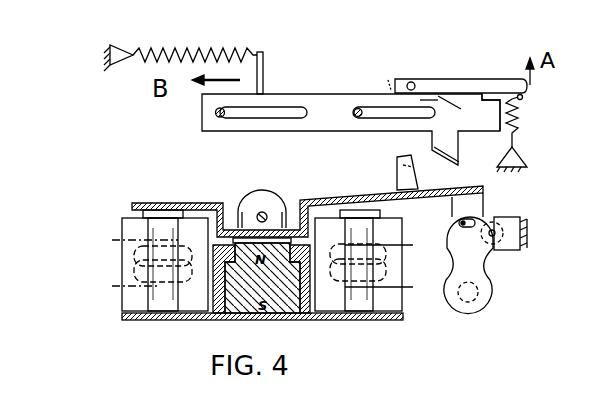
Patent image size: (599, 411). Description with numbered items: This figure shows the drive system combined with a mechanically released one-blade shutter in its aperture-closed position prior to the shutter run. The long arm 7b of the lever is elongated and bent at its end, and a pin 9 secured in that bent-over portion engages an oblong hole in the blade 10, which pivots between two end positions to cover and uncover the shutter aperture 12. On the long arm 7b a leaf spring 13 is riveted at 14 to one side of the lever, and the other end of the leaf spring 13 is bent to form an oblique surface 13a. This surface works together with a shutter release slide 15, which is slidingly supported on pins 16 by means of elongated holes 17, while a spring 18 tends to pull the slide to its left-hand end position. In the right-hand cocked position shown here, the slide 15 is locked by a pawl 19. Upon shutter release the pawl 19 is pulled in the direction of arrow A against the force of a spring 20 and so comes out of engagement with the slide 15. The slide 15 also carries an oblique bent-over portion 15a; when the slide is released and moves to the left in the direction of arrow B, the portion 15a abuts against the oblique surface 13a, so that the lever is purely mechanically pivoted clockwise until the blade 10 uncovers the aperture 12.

The long arm of the lever 7b is at (483, 192).
The pin 9 is at (505, 214).
The blade 10 is at (493, 297).
The shutter aperture 12 is at (489, 313).
The leaf spring 13 is at (344, 193).
The oblique surface 13a is at (397, 157).
The rivet 14 is at (316, 197).
The shutter release slide 15 is at (428, 102).
The oblique bent-over portion 15a is at (446, 152).
The pins 16 is at (217, 110).
The elongated holes 17 is at (235, 118).
The spring 18 is at (145, 52).
The pawl 19 is at (497, 88).
The spring 20 is at (513, 116).